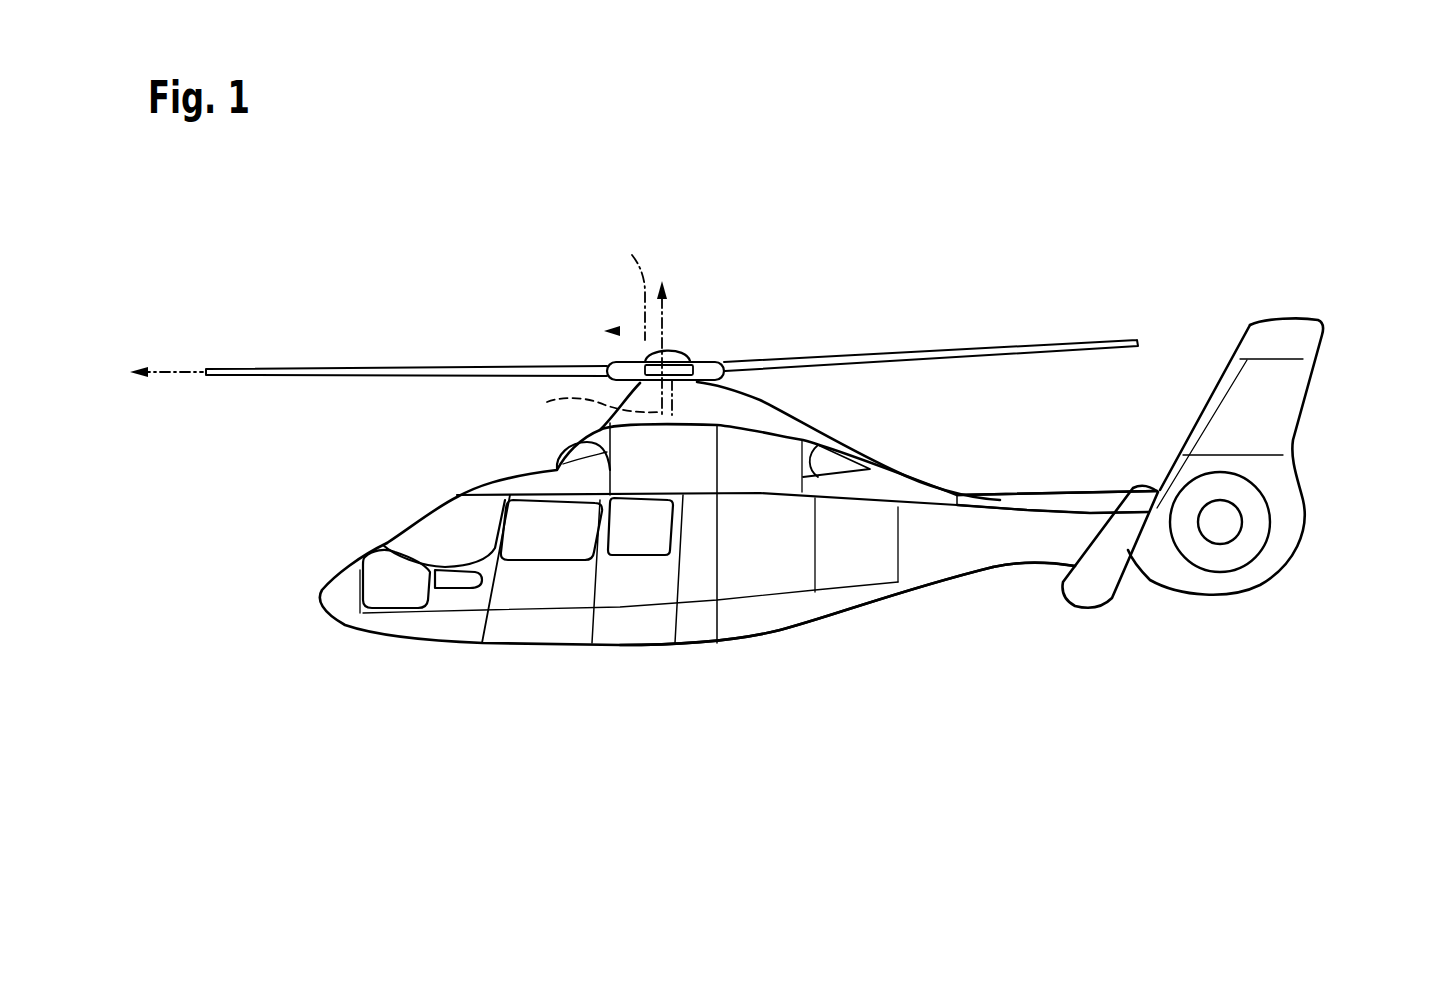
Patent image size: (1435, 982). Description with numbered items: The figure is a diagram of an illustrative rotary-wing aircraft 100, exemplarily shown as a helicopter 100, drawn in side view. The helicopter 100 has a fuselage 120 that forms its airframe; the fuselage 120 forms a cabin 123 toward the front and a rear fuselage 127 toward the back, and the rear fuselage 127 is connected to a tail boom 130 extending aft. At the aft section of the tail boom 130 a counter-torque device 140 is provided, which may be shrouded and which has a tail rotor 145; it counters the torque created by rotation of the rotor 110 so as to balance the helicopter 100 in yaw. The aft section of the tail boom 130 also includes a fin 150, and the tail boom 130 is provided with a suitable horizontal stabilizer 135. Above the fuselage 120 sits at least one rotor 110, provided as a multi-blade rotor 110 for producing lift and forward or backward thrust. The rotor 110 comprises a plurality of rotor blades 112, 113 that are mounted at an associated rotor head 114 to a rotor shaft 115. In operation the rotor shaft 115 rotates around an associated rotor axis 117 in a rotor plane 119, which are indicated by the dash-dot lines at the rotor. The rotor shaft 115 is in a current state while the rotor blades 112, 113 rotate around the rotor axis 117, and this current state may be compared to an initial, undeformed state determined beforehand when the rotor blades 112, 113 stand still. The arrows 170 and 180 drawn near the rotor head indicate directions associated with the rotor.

The rotary-wing aircraft 100 is at (502, 267).
The rotor 110 is at (474, 361).
The rotor blade 112 is at (310, 368).
The rotor blade 113 is at (1107, 340).
The rotor head 114 is at (697, 346).
The rotor shaft 115 is at (580, 406).
The rotor axis 117 is at (634, 317).
The rotor plane 119 is at (160, 368).
The fuselage 120 is at (747, 620).
The cabin 123 is at (444, 538).
The rear fuselage 127 is at (852, 602).
The tail boom 130 is at (1040, 523).
The horizontal stabilizer 135 is at (1100, 580).
The counter-torque device 140 is at (1274, 508).
The tail rotor 145 is at (1230, 547).
The fin 150 is at (1273, 362).
The lift direction arrow 170 is at (677, 340).
The flight direction arrow 180 is at (618, 331).